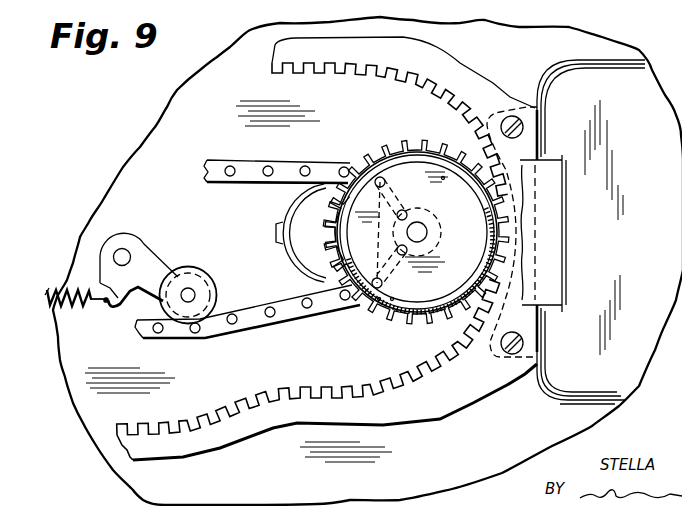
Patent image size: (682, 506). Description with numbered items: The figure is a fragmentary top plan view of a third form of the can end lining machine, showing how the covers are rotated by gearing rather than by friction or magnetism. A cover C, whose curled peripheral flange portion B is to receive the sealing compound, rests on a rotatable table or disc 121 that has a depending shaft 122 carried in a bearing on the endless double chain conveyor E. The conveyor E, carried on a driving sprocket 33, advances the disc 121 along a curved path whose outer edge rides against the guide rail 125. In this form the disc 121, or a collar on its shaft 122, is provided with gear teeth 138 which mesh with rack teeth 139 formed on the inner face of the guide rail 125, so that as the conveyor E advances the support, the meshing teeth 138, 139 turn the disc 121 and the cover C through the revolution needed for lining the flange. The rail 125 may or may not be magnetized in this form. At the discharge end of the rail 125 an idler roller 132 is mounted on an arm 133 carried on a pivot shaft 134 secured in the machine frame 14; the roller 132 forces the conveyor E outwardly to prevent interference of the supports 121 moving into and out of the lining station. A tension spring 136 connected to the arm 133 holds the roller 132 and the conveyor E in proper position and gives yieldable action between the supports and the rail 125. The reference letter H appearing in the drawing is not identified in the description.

The frame 14 is at (597, 46).
The guide rail 125 is at (487, 78).
The rack teeth 139 is at (303, 69).
The gear teeth 138 is at (417, 215).
The disc 121 is at (428, 150).
The shaft 122 is at (436, 218).
The conveyor E is at (237, 159).
The cover C is at (445, 175).
The curled peripheral flange portion B is at (378, 300).
The reference point H is at (392, 300).
The driving sprocket 33 is at (292, 247).
The arm 133 is at (158, 262).
The pivot shaft 134 is at (124, 249).
The idler roller 132 is at (208, 280).
The tension spring 136 is at (47, 289).